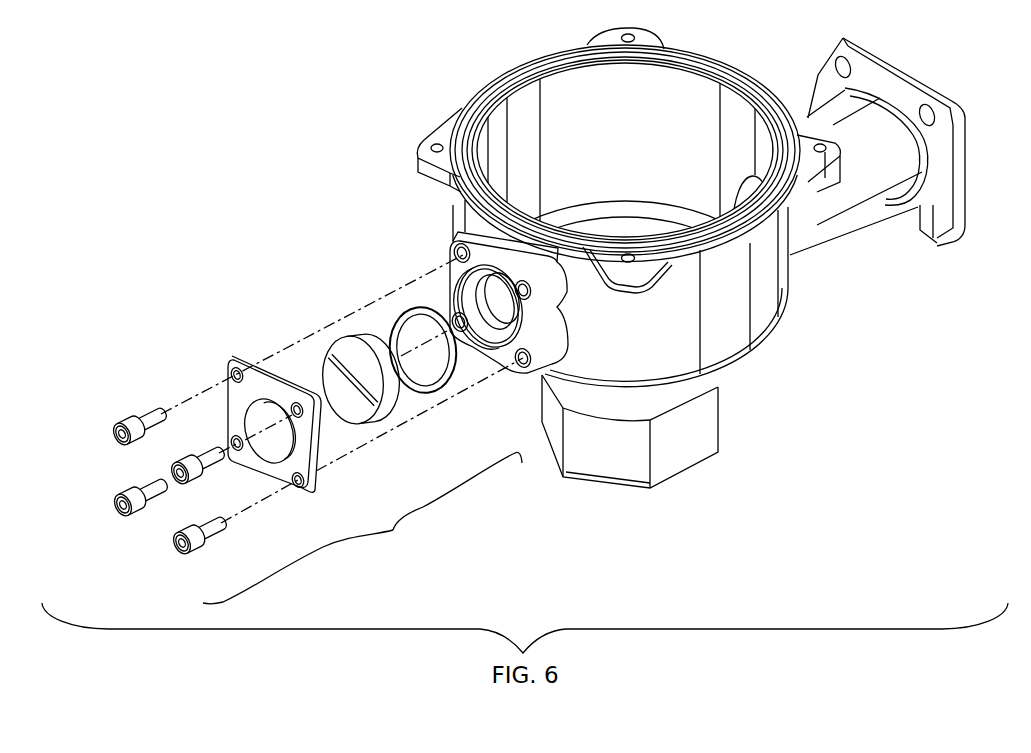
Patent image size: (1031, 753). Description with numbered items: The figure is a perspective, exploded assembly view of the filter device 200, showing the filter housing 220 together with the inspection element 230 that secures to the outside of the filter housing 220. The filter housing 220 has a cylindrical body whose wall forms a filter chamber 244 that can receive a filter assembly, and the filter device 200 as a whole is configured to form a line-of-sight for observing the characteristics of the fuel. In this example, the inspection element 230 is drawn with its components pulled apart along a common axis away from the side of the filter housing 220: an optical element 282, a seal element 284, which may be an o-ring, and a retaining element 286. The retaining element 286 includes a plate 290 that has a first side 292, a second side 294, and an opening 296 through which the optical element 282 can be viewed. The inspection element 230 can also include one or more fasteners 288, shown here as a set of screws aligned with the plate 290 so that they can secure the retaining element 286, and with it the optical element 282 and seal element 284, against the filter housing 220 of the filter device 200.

The filter device 200 is at (240, 102).
The filter housing 220 is at (792, 363).
The filter chamber 244 is at (668, 80).
The inspection element 230 is at (393, 530).
The retaining element 286 is at (216, 373).
The fasteners 288 is at (115, 427).
The plate 290 is at (243, 358).
The first side 292 is at (323, 452).
The second side 294 is at (313, 490).
The opening 296 is at (274, 446).
The optical element 282 is at (343, 343).
The seal element 284 is at (402, 310).